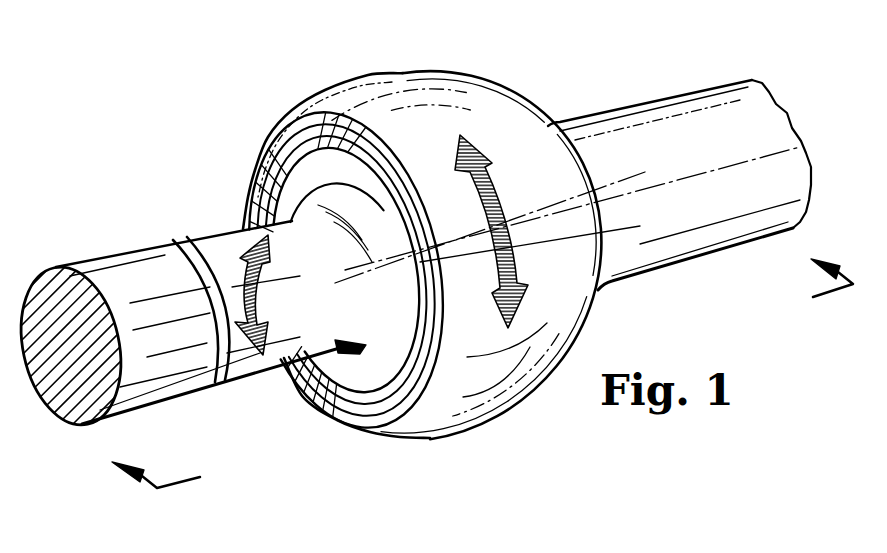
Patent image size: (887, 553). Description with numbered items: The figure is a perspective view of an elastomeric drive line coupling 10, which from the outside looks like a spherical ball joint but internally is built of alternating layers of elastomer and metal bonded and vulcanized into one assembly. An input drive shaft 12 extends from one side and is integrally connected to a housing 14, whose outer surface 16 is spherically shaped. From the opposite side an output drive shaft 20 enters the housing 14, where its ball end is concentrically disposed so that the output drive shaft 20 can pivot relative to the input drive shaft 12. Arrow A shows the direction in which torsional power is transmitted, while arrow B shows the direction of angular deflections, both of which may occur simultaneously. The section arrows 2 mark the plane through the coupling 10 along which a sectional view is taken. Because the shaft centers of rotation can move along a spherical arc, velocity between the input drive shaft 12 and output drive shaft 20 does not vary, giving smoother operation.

The elastomeric drive line coupling 10 is at (409, 243).
The input drive shaft 12 is at (684, 97).
The housing 14 is at (486, 95).
The outer surface 16 is at (469, 440).
The output drive shaft 20 is at (128, 245).
The arrow A is at (520, 270).
The arrow B is at (283, 322).
The section line 2- 2 is at (490, 390).